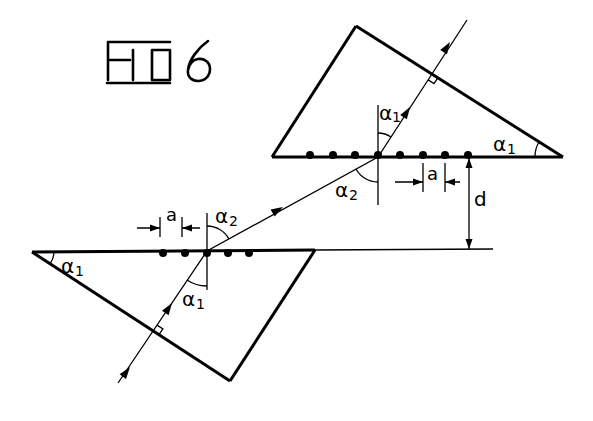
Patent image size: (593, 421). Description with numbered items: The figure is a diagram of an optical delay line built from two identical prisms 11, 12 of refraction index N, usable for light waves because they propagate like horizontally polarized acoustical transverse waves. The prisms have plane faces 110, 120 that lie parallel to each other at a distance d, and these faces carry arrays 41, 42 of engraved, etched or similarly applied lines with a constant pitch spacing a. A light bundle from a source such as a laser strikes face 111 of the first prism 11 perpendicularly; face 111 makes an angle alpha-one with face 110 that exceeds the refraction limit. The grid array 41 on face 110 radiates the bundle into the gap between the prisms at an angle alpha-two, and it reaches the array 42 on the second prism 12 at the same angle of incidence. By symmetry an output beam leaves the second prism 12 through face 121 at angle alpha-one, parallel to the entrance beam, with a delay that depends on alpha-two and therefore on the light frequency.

The prism 11 is at (174, 299).
The plane face 110 is at (93, 250).
The face 111 is at (87, 291).
The grid array 41 is at (243, 262).
The prism 12 is at (417, 102).
The plane face 120 is at (507, 160).
The face 121 is at (530, 107).
The array 42 is at (355, 155).